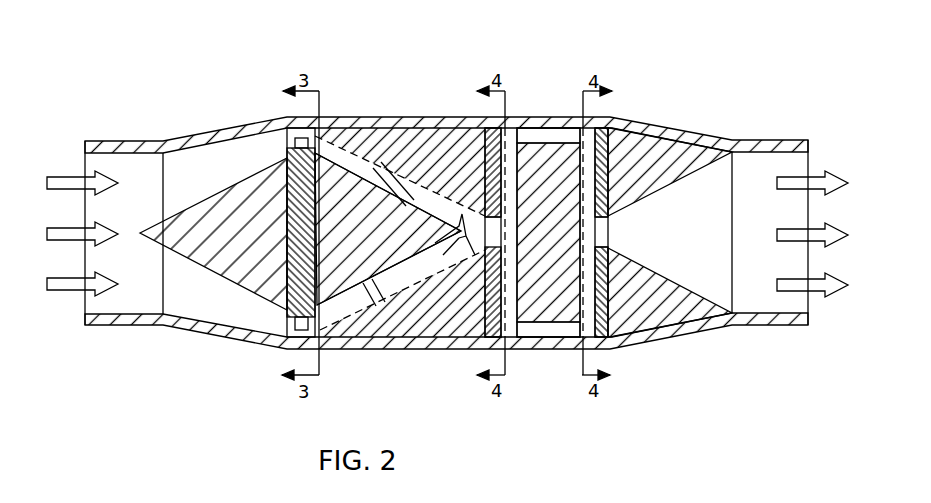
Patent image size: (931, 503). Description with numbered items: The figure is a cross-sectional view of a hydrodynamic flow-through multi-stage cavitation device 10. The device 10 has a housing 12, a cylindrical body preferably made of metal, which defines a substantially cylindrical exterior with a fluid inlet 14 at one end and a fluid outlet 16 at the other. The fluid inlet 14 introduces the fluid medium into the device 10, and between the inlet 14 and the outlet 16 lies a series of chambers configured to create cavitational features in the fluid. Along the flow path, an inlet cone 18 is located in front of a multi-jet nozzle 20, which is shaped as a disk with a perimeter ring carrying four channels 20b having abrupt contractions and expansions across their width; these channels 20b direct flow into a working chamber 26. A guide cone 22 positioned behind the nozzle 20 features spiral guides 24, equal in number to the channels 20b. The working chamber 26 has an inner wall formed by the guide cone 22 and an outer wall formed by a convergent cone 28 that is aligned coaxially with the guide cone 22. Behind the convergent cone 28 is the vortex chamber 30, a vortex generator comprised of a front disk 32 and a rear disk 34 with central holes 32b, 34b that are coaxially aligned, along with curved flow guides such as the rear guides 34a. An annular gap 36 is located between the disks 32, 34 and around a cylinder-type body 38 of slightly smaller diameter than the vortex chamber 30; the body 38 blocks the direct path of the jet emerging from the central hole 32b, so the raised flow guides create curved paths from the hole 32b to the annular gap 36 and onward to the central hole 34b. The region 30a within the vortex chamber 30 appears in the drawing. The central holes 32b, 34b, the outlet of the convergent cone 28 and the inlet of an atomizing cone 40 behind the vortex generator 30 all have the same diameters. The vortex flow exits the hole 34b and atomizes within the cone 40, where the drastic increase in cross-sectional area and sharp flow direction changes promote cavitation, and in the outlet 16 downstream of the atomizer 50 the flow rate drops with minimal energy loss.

The multi-stage cavitation device 10 is at (397, 68).
The housing 12 is at (446, 196).
The fluid inlet 14 is at (105, 207).
The fluid outlet 16 is at (790, 214).
The inlet cone 18 is at (213, 205).
The multi-jet nozzle 20 is at (267, 217).
The channels 20b is at (256, 223).
The guide cone 22 is at (377, 171).
The spiral guides 24 is at (401, 304).
The working chamber 26 is at (400, 146).
The convergent cone 28 is at (400, 320).
The vortex chamber 30 is at (546, 335).
The upper passage 30a is at (545, 87).
The front disk 32 is at (459, 271).
The central hole of front disk 32b is at (464, 151).
The rear disk 34 is at (625, 216).
The curved flow guides of rear disk 34a is at (627, 312).
The central hole of rear disk 34b is at (664, 164).
The annular gap 36 is at (551, 196).
The cylinder-type body 38 is at (564, 368).
The atomizing cone 40 is at (670, 212).
The atomizer 50 is at (700, 266).